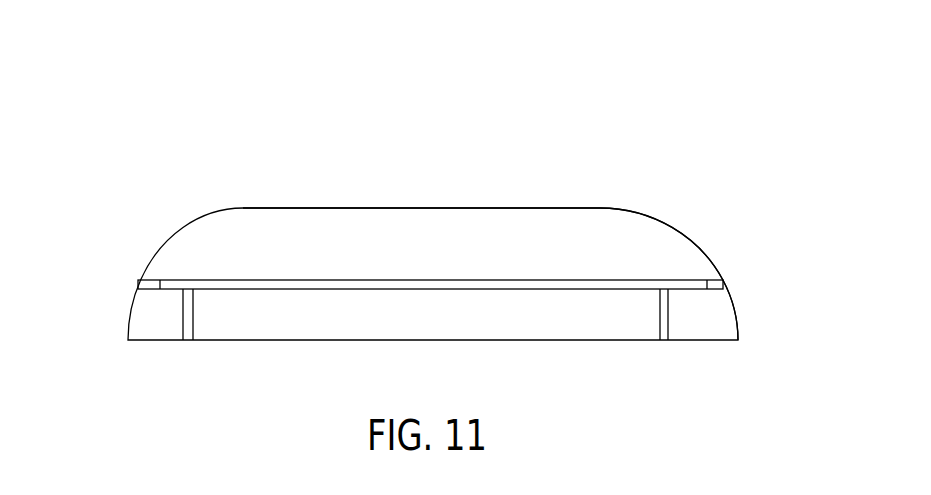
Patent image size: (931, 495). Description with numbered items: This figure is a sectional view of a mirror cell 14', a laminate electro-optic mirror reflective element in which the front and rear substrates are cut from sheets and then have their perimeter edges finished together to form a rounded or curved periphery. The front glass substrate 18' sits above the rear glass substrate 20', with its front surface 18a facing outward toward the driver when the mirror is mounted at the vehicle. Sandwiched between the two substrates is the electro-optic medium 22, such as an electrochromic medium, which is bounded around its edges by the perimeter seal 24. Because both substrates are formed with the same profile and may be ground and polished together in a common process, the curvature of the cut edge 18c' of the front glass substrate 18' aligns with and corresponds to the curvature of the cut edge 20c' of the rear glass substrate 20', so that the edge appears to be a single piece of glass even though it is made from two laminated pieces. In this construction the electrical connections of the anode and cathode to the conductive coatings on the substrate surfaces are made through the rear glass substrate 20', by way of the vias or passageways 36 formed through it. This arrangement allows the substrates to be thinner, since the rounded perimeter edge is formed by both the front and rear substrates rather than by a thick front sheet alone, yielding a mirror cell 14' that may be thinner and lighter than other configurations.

The mirror cell 14' is at (456, 274).
The front glass substrate 18' is at (432, 204).
The front surface 18a is at (510, 207).
The cut edge of the front glass substrate 18c' is at (696, 219).
The rear glass substrate 20' is at (402, 359).
The cut edge of the rear glass substrate 20c' is at (798, 315).
The electro-optic medium 22 is at (215, 288).
The perimeter seal 24 is at (140, 285).
The vias or passageways 36 is at (197, 338).